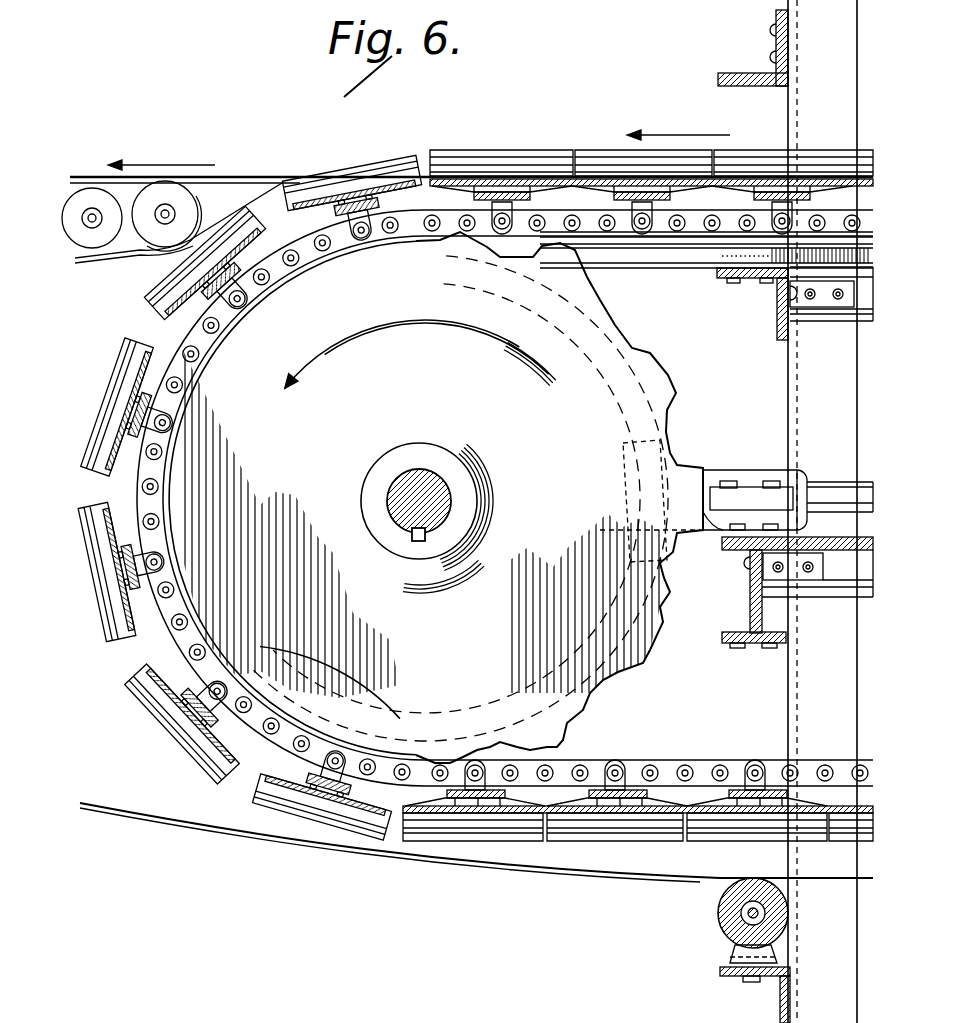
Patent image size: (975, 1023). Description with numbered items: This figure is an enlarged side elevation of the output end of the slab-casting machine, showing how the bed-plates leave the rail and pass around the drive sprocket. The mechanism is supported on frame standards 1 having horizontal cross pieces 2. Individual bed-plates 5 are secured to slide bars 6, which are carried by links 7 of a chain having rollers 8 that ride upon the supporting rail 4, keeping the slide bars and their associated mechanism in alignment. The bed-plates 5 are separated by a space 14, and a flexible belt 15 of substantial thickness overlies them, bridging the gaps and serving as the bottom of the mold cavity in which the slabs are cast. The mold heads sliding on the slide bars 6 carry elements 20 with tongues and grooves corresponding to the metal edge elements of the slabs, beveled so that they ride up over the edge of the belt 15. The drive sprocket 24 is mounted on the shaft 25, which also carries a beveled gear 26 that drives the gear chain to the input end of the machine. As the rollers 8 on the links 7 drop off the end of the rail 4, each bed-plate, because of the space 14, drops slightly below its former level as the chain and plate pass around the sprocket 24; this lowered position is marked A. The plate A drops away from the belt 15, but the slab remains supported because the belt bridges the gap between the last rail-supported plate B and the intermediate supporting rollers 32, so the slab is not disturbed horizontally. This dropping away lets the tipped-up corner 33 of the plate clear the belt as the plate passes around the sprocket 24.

The frame standards 1 is at (822, 511).
The horizontal cross pieces 2 is at (727, 73).
The supporting rail 4 is at (693, 252).
The bed-plates 5 is at (258, 232).
The slide bars 6 is at (250, 252).
The links 7 is at (617, 236).
The rollers 8 is at (643, 236).
The space between bed-plates 14 is at (711, 152).
The flexible belt 15 is at (242, 180).
The elements 20 is at (143, 302).
The drive sprocket 24 is at (427, 490).
The shaft 25 is at (415, 492).
The beveled gear 26 is at (612, 446).
The intermediate supporting rollers 32 is at (150, 238).
The tipped-up corner 33 is at (423, 190).
The lowered plate position A is at (451, 186).
The last rail supported plate B is at (588, 192).